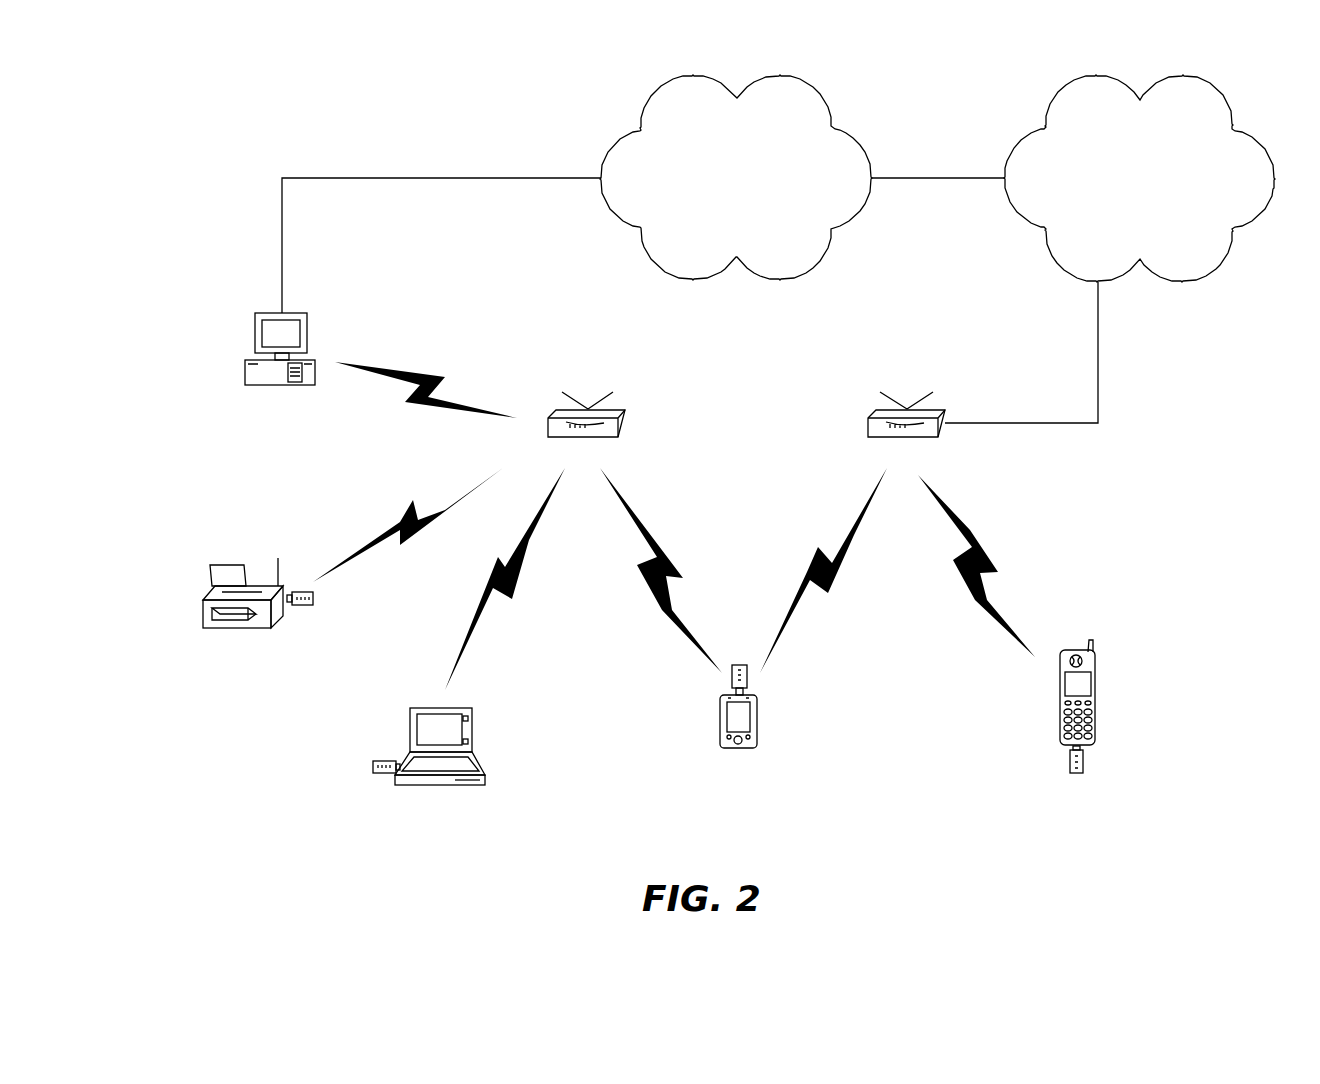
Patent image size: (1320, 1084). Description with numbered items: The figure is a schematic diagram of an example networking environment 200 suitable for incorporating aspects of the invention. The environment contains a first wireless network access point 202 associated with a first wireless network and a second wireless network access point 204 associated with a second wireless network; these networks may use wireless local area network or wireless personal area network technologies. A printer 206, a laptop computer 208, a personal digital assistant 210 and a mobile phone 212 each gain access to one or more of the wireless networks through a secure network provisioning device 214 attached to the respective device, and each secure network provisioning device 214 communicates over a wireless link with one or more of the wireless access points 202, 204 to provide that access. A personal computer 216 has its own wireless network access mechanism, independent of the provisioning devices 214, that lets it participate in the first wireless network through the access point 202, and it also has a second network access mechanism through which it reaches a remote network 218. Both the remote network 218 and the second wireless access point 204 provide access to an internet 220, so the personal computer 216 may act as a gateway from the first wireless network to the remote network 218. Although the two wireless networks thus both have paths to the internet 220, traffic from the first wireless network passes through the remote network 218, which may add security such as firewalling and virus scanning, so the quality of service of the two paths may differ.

The networking environment 200 is at (156, 792).
The first wireless network access point 202 is at (655, 430).
The second wireless network access point 204 is at (832, 424).
The printer 206 is at (184, 607).
The laptop computer 208 is at (514, 766).
The personal digital assistant 210 is at (701, 734).
The mobile phone 212 is at (1117, 709).
The secure network provisioning device 214 is at (302, 618).
The personal computer 216 is at (236, 358).
The remote network 218 is at (810, 241).
The internet 220 is at (1208, 245).